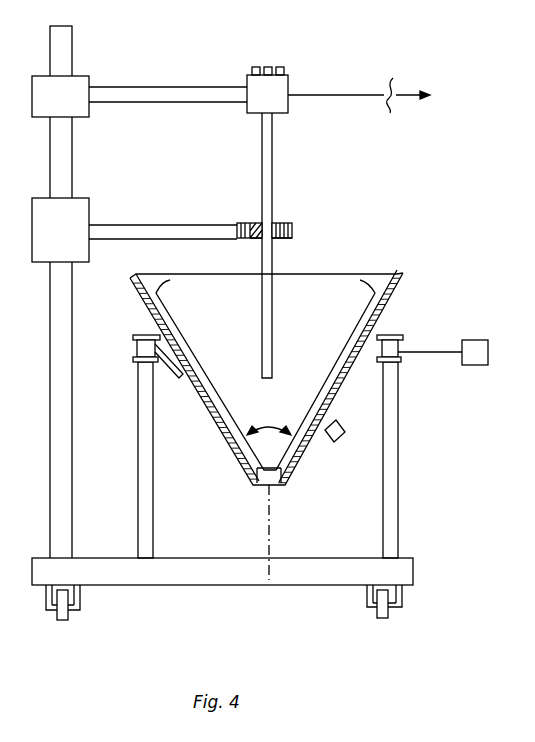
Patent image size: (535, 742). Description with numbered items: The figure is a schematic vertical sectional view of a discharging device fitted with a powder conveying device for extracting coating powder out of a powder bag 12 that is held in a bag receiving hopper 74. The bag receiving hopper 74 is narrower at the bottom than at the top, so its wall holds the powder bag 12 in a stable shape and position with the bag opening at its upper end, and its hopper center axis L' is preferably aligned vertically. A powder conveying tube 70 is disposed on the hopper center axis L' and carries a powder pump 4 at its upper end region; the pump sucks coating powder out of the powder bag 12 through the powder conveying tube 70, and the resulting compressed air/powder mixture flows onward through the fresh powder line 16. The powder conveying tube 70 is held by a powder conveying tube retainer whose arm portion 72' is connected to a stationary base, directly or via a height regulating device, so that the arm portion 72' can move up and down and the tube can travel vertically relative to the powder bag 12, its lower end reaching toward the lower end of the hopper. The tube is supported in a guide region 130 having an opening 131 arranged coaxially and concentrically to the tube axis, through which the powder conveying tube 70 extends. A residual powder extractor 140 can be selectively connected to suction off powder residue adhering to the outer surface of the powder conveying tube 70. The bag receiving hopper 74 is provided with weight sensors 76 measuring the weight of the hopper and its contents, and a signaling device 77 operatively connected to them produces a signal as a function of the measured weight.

The powder pump 4 is at (247, 82).
The fresh powder line 16 is at (360, 95).
The guide region 130 is at (248, 220).
The residual powder extractor 140 is at (222, 208).
The arm portion 72' is at (163, 217).
The opening 131 is at (251, 240).
The powder bag 12 is at (291, 349).
The bag receiving hopper 74 is at (396, 292).
The powder conveying tube 70 is at (262, 291).
The weight sensor 76 is at (146, 352).
The signaling device 77 is at (470, 340).
The hopper center axis L' is at (291, 532).